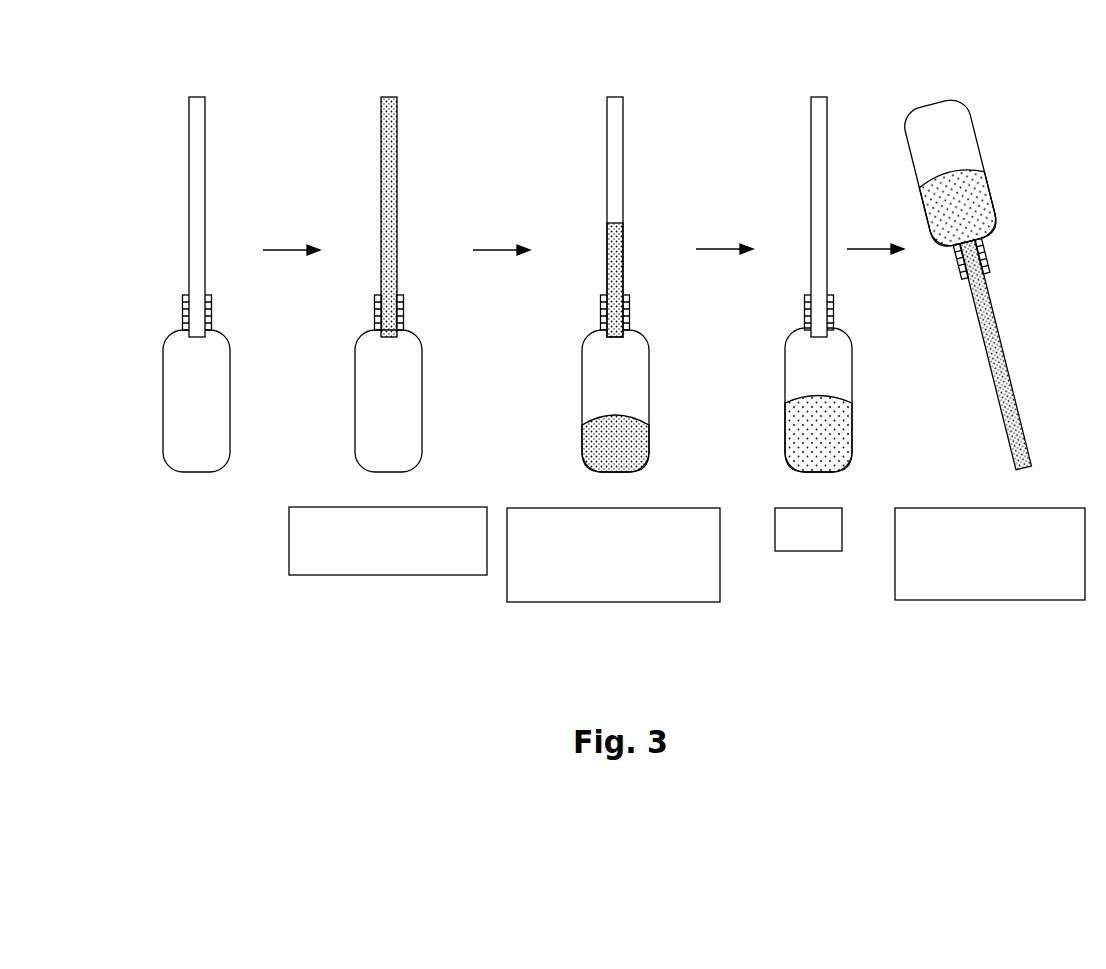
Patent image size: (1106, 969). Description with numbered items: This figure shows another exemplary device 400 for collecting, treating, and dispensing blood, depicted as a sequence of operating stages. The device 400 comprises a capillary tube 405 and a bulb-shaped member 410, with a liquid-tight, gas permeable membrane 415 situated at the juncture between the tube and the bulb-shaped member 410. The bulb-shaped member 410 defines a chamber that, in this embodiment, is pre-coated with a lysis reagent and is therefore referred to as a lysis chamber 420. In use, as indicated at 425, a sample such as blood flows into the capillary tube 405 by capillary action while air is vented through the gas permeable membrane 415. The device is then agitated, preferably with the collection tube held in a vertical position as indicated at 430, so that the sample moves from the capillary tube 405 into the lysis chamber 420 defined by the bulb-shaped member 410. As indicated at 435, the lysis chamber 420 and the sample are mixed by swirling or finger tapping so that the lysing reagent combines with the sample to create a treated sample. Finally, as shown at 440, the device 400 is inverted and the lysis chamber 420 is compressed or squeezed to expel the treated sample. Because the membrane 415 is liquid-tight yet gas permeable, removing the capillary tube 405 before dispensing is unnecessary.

The device 400 is at (191, 253).
The capillary tube 405 is at (202, 165).
The bulb-shaped member 410 is at (162, 397).
The liquid-tight, gas permeable membrane 415 is at (211, 297).
The lysis chamber 420 is at (198, 410).
The sample collection by capillary action 425 is at (373, 576).
The vertical agitation step 430 is at (563, 627).
The mixing step 435 is at (812, 553).
The inversion and squeezing step 440 is at (980, 602).